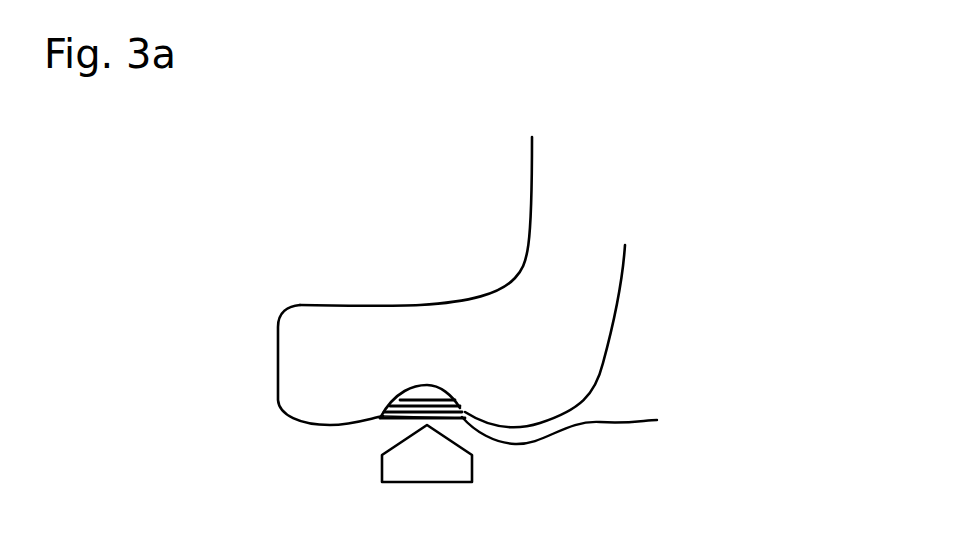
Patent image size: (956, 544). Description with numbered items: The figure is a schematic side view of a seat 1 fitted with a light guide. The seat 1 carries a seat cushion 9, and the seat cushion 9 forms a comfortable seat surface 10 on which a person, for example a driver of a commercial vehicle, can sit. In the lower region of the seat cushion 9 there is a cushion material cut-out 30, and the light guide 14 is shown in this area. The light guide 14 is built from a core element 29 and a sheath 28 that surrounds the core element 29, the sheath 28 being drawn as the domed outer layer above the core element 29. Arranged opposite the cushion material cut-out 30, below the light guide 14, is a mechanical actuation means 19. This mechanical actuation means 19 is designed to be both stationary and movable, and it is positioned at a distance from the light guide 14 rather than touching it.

The seat 1 is at (632, 222).
The seat cushion 9 is at (308, 365).
The seat surface 10 is at (357, 302).
The light guide 14 is at (387, 425).
The mechanical actuation means 19 is at (455, 470).
The sheath 28 is at (460, 400).
The core element 29 is at (578, 424).
The cushion material cut-out 30 is at (468, 398).